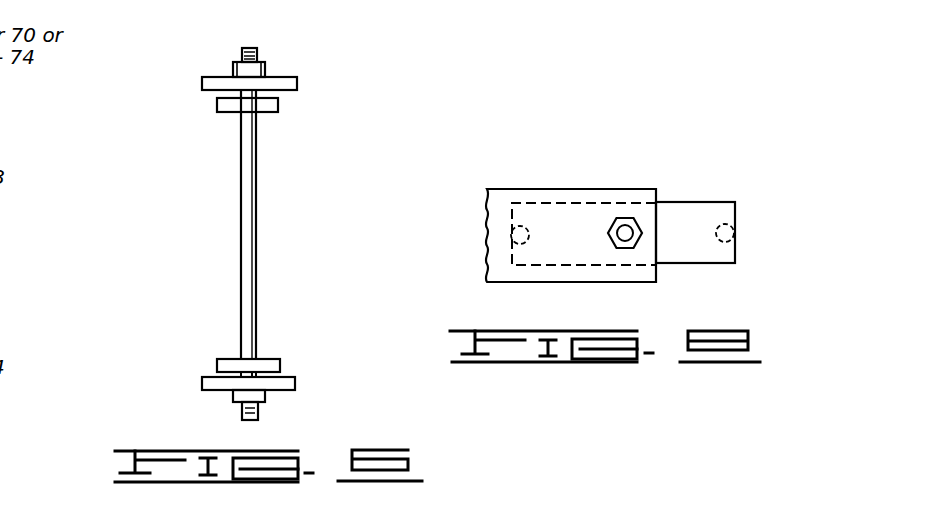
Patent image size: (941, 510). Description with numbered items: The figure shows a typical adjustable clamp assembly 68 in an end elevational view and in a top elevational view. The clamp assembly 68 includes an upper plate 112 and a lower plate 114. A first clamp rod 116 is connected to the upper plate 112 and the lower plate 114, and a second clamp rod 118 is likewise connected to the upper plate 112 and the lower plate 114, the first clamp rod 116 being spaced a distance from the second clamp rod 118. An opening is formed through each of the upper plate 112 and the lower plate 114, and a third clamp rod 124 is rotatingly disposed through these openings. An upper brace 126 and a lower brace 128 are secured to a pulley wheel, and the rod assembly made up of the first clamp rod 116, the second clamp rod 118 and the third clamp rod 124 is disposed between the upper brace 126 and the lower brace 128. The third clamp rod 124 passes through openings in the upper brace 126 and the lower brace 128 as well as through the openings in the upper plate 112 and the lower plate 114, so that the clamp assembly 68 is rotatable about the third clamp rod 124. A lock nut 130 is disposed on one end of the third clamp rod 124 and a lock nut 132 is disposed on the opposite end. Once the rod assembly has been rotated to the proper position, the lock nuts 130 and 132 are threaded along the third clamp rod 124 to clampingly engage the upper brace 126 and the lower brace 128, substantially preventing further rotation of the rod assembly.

In FIG. 5, the adjustable clamp assembly 68 is at (296, 60).
In FIG. 6, the adjustable clamp assembly 68 is at (682, 188).
In FIG. 5, the upper plate 112 is at (274, 108).
In FIG. 6, the upper plate 112 is at (702, 211).
In FIG. 5, the lower plate 114 is at (277, 360).
In FIG. 6, the first clamp rod 116 is at (520, 226).
In FIG. 5, the second clamp rod 118 is at (244, 232).
In FIG. 6, the second clamp rod 118 is at (733, 230).
In FIG. 6, the third clamp rod 124 is at (625, 218).
In FIG. 5, the upper brace 126 is at (213, 82).
In FIG. 6, the upper brace 126 is at (498, 200).
In FIG. 5, the lower brace 128 is at (215, 384).
In FIG. 5, the lock nut 130 is at (258, 62).
In FIG. 6, the lock nut 130 is at (636, 246).
In FIG. 5, the lock nut 132 is at (247, 396).